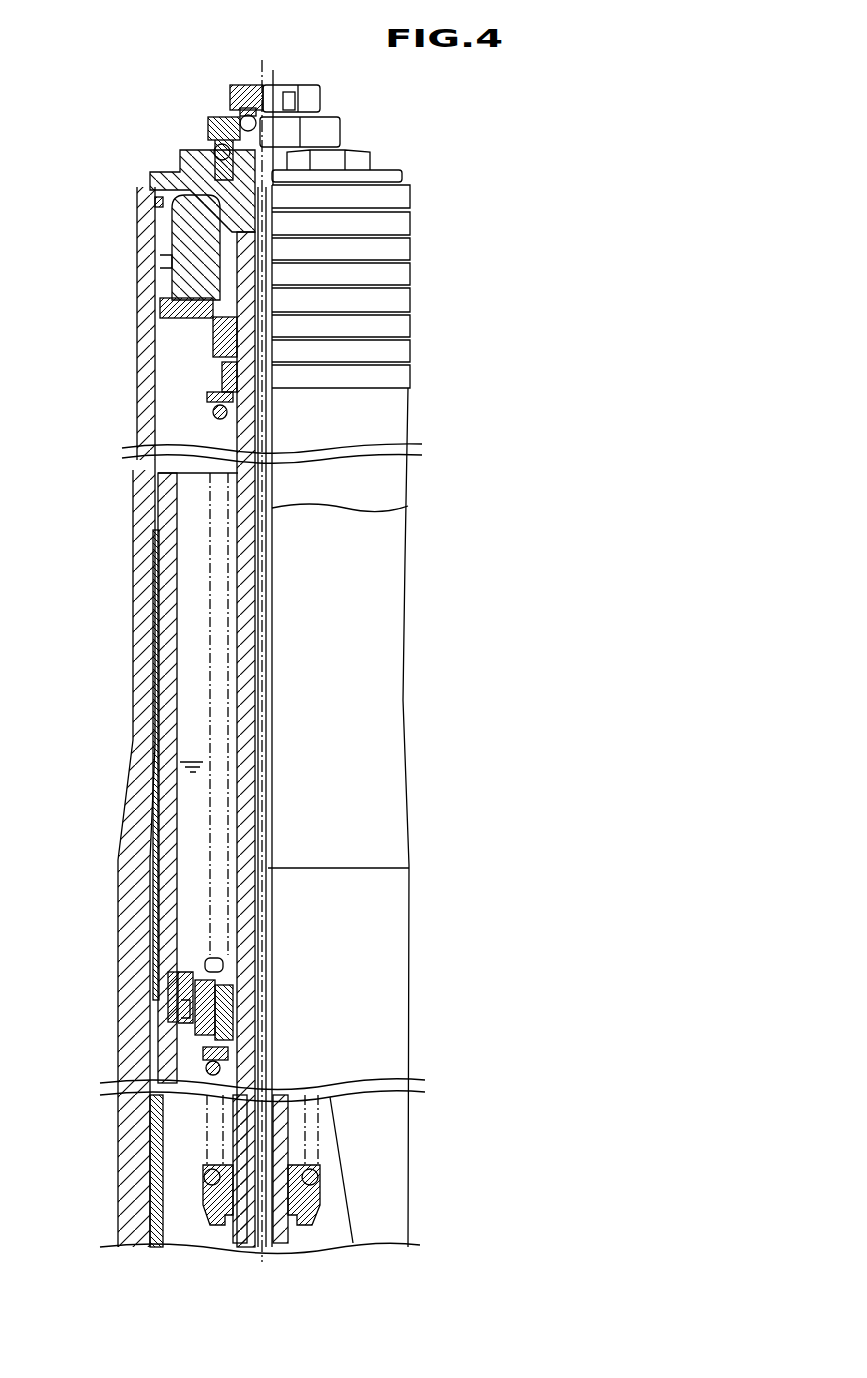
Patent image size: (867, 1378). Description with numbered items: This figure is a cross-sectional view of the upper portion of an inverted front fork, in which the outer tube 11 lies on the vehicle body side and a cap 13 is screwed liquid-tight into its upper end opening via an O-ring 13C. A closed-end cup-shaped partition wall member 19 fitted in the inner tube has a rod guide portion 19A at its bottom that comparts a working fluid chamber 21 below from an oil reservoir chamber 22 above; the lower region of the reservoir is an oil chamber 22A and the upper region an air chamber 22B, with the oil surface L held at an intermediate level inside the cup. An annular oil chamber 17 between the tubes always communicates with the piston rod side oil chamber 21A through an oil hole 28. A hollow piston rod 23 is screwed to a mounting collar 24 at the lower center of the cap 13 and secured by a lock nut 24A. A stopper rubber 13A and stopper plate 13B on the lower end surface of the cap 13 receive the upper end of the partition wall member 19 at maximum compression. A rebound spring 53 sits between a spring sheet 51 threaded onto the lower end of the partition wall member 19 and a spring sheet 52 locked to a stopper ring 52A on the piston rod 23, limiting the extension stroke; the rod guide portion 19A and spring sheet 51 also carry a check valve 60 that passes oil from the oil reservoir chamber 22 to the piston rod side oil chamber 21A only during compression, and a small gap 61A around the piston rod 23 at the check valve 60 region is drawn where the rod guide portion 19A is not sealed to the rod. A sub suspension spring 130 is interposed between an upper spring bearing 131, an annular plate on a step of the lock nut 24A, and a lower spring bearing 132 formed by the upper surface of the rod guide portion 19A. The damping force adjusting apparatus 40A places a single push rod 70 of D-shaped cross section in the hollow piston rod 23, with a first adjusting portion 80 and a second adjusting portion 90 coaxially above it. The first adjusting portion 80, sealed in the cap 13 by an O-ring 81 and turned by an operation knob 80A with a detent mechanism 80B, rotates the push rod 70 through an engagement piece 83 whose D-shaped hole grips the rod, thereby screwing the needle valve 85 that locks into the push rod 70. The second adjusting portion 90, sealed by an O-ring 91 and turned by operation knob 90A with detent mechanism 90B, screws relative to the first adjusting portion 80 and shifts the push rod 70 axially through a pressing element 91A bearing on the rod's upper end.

The outer tube 11 is at (138, 586).
The cap 13 is at (180, 163).
The stopper rubber 13A is at (195, 225).
The stopper plate 13B is at (162, 307).
The O-ring 13C is at (155, 202).
The annular oil chamber 17 is at (157, 1140).
The partition wall member 19 is at (157, 682).
The rod guide portion 19A is at (190, 968).
The working fluid chamber 21 is at (135, 1222).
The piston rod side oil chamber 21A is at (198, 1230).
The oil reservoir chamber 22 is at (167, 401).
The oil chamber 22A is at (185, 798).
The air chamber 22B is at (185, 547).
The piston rod 23 is at (243, 628).
The mounting collar 24 is at (213, 343).
The lock nut 24A is at (213, 373).
The oil hole 28 is at (215, 1050).
The damping force adjusting apparatus 40A is at (357, 140).
The spring sheet 51 is at (210, 1065).
The spring sheet 52 is at (240, 1168).
The stopper ring 52A is at (210, 1195).
The rebound spring 53 is at (215, 1088).
The check valve 60 is at (195, 1040).
The seal ring 61A is at (183, 992).
The push rod 70 is at (272, 505).
The first adjusting portion 80 is at (240, 120).
The operation knob 80A is at (222, 118).
The detent mechanism 80B is at (218, 148).
The O-ring 81 is at (214, 160).
The engagement piece 83 is at (195, 257).
The needle valve 85 is at (268, 1240).
The second adjusting portion 90 is at (265, 88).
The operation knob 90A is at (248, 88).
The detent mechanism 90B is at (232, 95).
The O-ring 91 is at (277, 128).
The pressing element 91A is at (272, 203).
The sub suspension spring 130 is at (213, 413).
The upper spring bearing 131 is at (207, 400).
The lower spring bearing 132 is at (215, 960).
The oil surface L is at (190, 760).